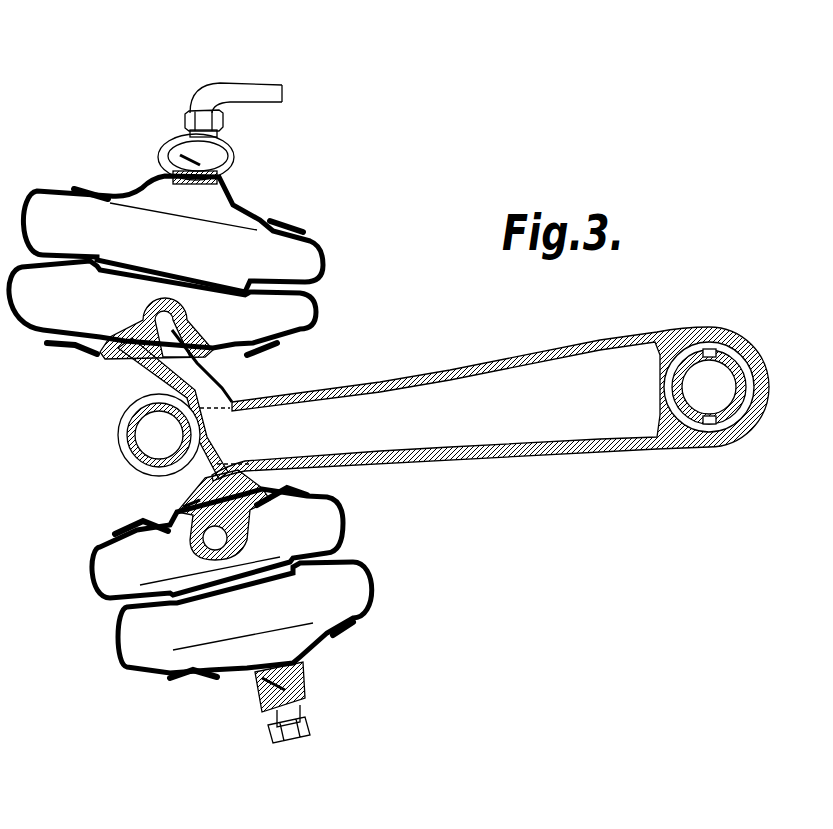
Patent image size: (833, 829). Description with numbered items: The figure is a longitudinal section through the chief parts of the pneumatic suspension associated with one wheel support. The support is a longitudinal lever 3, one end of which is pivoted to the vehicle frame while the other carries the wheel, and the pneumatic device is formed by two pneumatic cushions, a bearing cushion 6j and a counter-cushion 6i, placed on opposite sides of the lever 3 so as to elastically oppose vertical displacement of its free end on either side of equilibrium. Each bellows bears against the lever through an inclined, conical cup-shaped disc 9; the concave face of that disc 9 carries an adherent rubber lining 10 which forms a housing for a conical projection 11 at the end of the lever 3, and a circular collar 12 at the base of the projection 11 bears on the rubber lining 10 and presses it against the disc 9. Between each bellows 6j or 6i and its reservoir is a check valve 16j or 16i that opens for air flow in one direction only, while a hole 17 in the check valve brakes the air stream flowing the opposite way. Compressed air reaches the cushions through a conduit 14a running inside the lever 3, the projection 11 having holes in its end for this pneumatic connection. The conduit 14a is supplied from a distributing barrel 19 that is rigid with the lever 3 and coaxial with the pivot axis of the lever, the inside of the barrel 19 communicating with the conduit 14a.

The longitudinal lever 3 is at (477, 364).
The bearing cushion 6j is at (287, 330).
The counter-cushion 6i is at (343, 583).
The cup-shaped disc 9 is at (263, 215).
The rubber lining 10 is at (233, 515).
The conical projection 11 is at (210, 538).
The circular collar 12 is at (185, 507).
The conduit 14a is at (527, 393).
The check valve 16j is at (207, 168).
The check valve 16i is at (267, 687).
The hole 17 is at (200, 161).
The barrel 19 is at (768, 405).